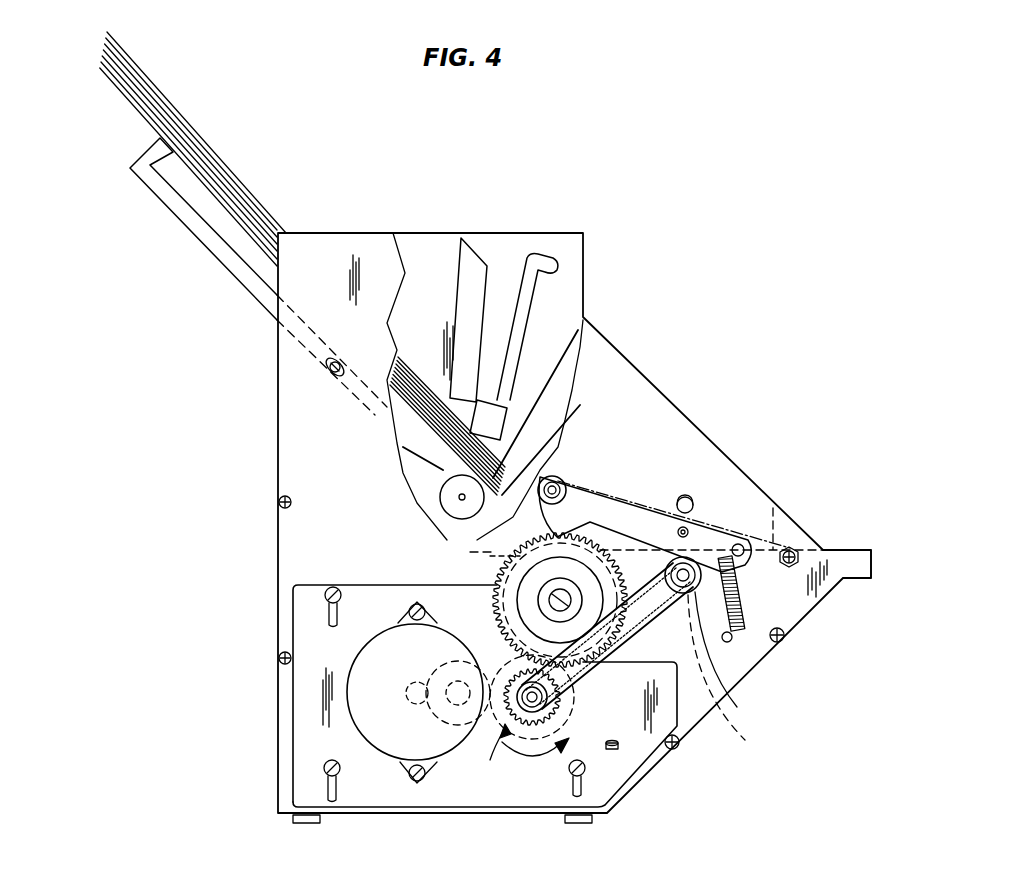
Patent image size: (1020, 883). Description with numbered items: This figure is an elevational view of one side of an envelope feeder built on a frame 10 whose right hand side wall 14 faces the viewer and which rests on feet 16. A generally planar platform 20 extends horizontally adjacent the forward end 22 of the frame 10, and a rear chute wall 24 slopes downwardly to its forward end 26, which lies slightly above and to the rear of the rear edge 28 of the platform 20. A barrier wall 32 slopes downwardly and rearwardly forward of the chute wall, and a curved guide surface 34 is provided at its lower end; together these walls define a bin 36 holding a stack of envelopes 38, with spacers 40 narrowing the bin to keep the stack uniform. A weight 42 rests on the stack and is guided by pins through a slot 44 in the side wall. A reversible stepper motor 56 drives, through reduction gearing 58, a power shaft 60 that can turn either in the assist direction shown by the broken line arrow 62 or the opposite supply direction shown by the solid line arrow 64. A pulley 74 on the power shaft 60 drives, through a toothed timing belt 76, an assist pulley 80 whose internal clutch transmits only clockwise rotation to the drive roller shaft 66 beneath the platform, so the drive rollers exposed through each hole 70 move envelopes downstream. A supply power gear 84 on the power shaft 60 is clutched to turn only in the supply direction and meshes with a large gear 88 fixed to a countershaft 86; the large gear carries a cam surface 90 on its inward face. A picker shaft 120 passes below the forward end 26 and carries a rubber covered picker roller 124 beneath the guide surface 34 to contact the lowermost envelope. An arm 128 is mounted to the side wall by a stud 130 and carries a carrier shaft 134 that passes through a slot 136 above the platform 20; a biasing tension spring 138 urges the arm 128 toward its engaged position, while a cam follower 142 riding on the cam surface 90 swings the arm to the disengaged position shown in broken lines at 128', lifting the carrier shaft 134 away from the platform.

The frame 10 is at (263, 763).
The right hand side wall 14 is at (690, 718).
The feet 16 is at (307, 823).
The platform 20 is at (773, 508).
The forward end 22 is at (858, 592).
The rear chute wall 24 is at (208, 240).
The forward end of chute wall 26 is at (447, 458).
The rear edge of platform 28 is at (480, 556).
The barrier wall 32 is at (578, 347).
The curved guide surface 34 is at (572, 445).
The bin 36 is at (448, 292).
The envelopes 38 is at (215, 158).
The spacers 40 is at (467, 265).
The weight 42 is at (493, 415).
The slot 44 is at (527, 302).
The stepper motor 56 is at (395, 740).
The reduction gearing 58 is at (453, 725).
The power shaft 60 is at (545, 705).
The assist direction arrow 62 is at (553, 717).
The supply direction arrow 64 is at (533, 754).
The drive roller shaft 66 is at (733, 703).
The hole 70 is at (736, 735).
The pulley 74 is at (493, 751).
The toothed timing belt 76 is at (642, 626).
The assist pulley 80 is at (700, 523).
The supply power gear 84 is at (556, 715).
The countershaft 86 is at (552, 610).
The large gear 88 is at (510, 583).
The cam surface 90 is at (493, 610).
The picker shaft 120 is at (462, 503).
The picker roller 124 is at (453, 487).
The arm 128 is at (674, 487).
The disengaged position of arm 128' is at (688, 480).
The stud 130 is at (560, 483).
The carrier shaft 134 is at (678, 530).
The slot 136 is at (688, 496).
The biasing tension spring 138 is at (742, 605).
The cam follower 142 is at (570, 540).